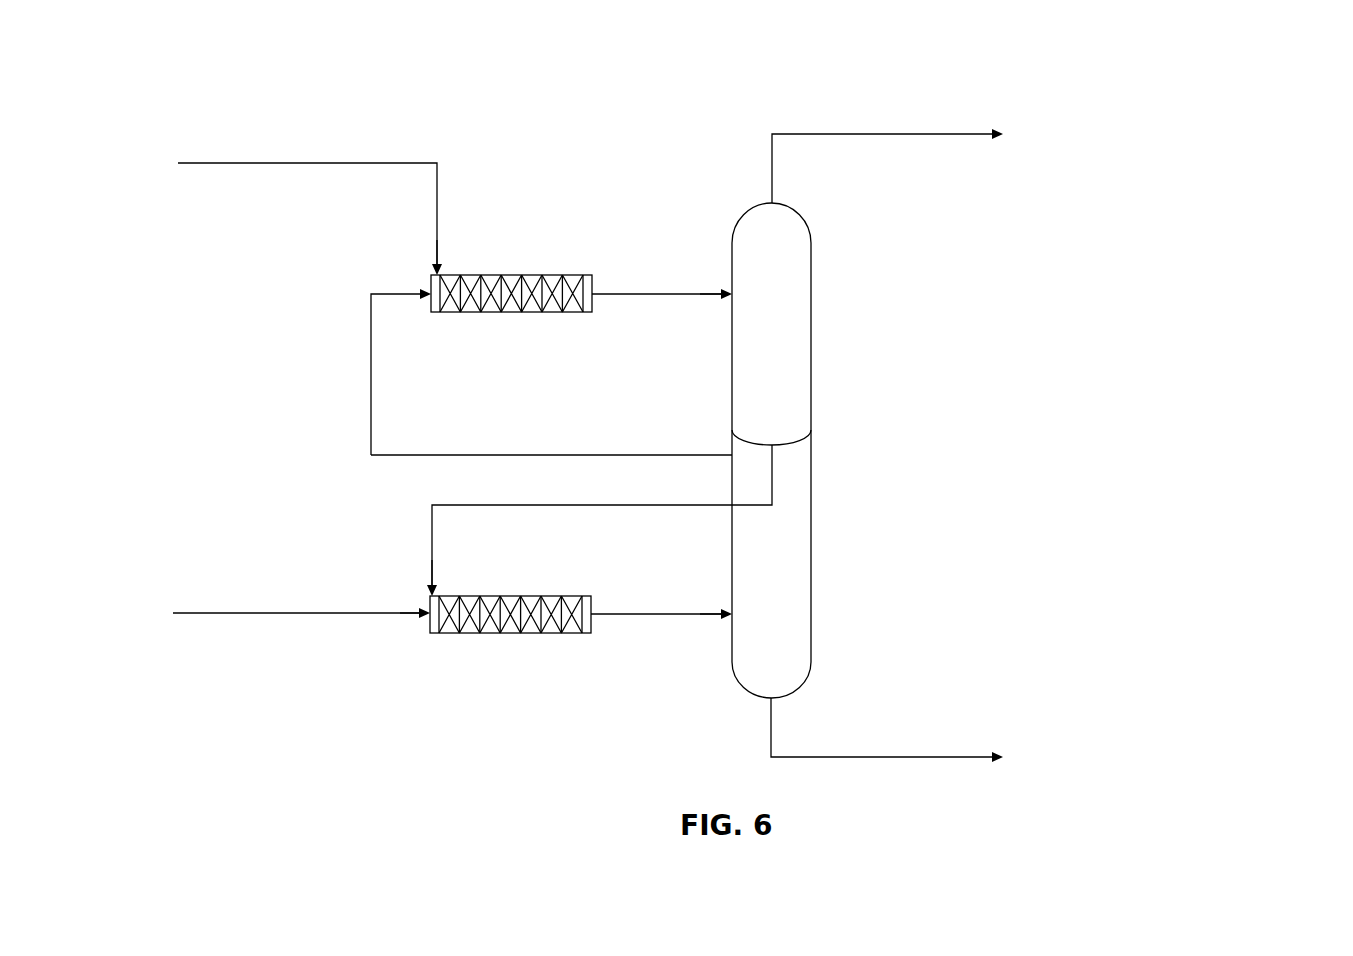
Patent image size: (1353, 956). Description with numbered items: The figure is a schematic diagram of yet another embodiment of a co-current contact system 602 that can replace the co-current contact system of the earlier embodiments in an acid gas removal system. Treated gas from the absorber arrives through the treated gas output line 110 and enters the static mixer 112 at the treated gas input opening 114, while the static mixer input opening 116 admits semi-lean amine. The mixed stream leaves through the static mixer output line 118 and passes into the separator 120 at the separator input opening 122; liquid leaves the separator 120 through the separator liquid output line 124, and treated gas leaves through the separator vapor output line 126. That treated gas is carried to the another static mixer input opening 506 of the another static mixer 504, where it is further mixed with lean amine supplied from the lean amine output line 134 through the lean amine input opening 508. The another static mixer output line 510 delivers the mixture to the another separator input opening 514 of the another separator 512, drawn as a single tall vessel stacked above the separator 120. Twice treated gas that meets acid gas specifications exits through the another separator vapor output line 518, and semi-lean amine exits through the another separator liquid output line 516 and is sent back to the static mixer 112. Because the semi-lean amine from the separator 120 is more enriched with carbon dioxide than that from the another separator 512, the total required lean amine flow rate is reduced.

The lean amine output line 134 is at (285, 163).
The lean amine input opening 508 is at (433, 270).
The another static mixer input opening 506 is at (425, 292).
The another static mixer 504 is at (535, 275).
The another static mixer output line 510 is at (612, 292).
The another separator input opening 514 is at (728, 292).
The another separator vapor output line 518 is at (775, 192).
The another separator 512 is at (812, 333).
The separator vapor output line 126 is at (715, 455).
The another separator liquid output line 516 is at (438, 557).
The treated gas output line 110 is at (285, 613).
The treated gas input opening 114 is at (428, 612).
The static mixer input opening 116 is at (438, 594).
The static mixer 112 is at (530, 596).
The static mixer output line 118 is at (610, 613).
The separator input opening 122 is at (728, 612).
The separator 120 is at (812, 613).
The separator liquid output line 124 is at (775, 715).
The gas treating system 602 is at (1200, 98).